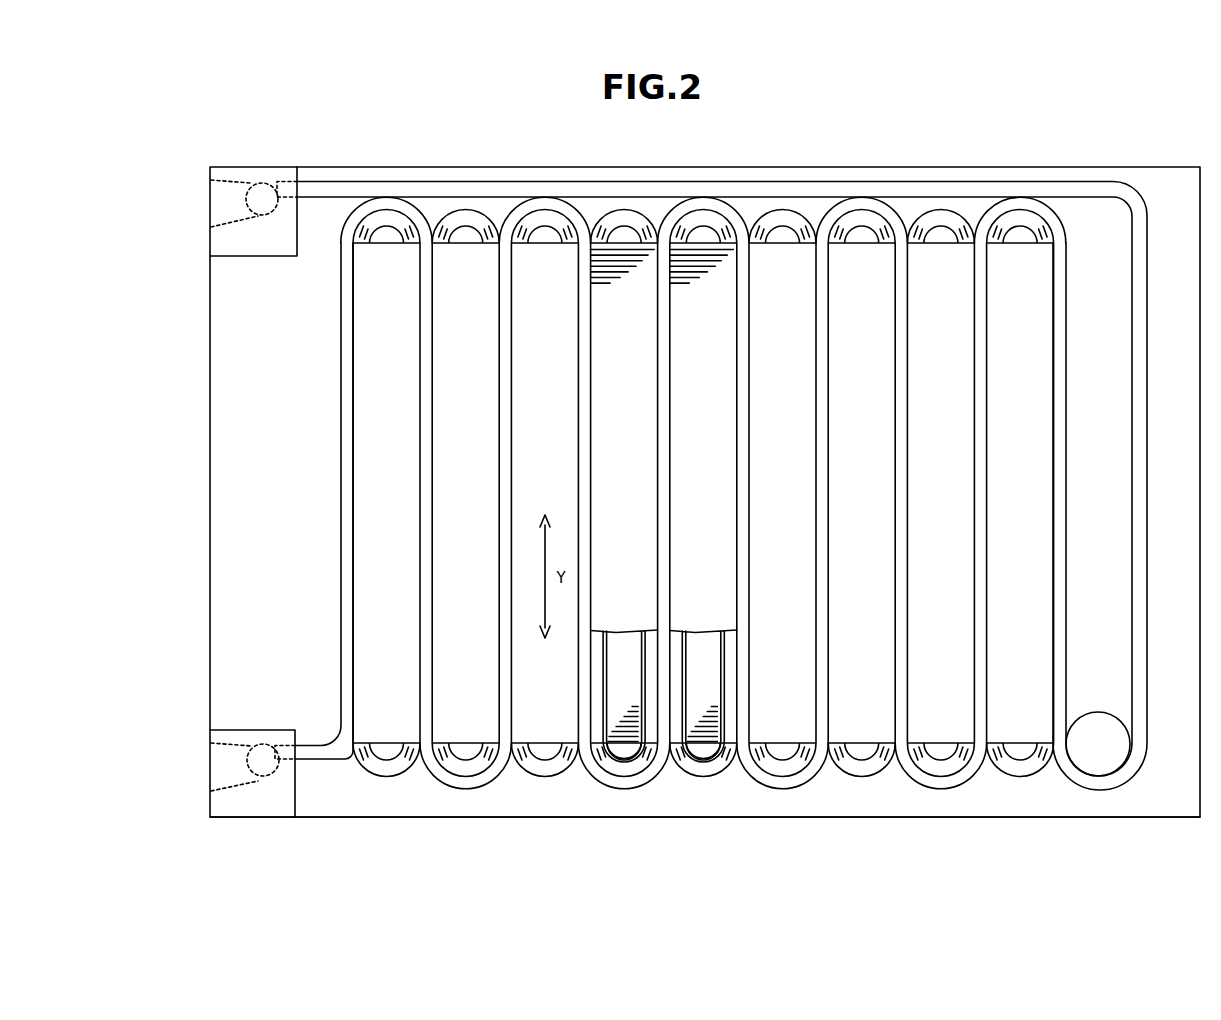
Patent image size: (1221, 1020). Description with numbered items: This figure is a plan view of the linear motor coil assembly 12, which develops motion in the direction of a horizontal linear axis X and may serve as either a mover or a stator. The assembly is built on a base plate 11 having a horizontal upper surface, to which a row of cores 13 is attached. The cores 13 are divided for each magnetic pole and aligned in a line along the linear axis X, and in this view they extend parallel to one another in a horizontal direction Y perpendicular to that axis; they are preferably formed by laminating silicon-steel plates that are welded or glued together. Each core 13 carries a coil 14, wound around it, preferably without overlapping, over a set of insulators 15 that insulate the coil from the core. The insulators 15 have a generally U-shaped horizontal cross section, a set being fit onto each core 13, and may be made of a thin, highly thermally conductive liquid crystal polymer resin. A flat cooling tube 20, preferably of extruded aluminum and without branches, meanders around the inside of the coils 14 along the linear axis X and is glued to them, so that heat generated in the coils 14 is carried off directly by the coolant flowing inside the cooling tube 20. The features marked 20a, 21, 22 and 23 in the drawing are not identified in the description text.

The base plate 11 is at (237, 530).
The linear motor coil assembly 12 is at (905, 861).
The cores 13 is at (528, 725).
The coils 14 is at (610, 763).
The insulators 15 is at (628, 762).
The cooling tube 20 is at (348, 187).
The pipe end portion 20a is at (298, 182).
The inlet joint 21 is at (215, 806).
The outlet joint 22 is at (215, 243).
The pipe turn portion 23 is at (1093, 748).